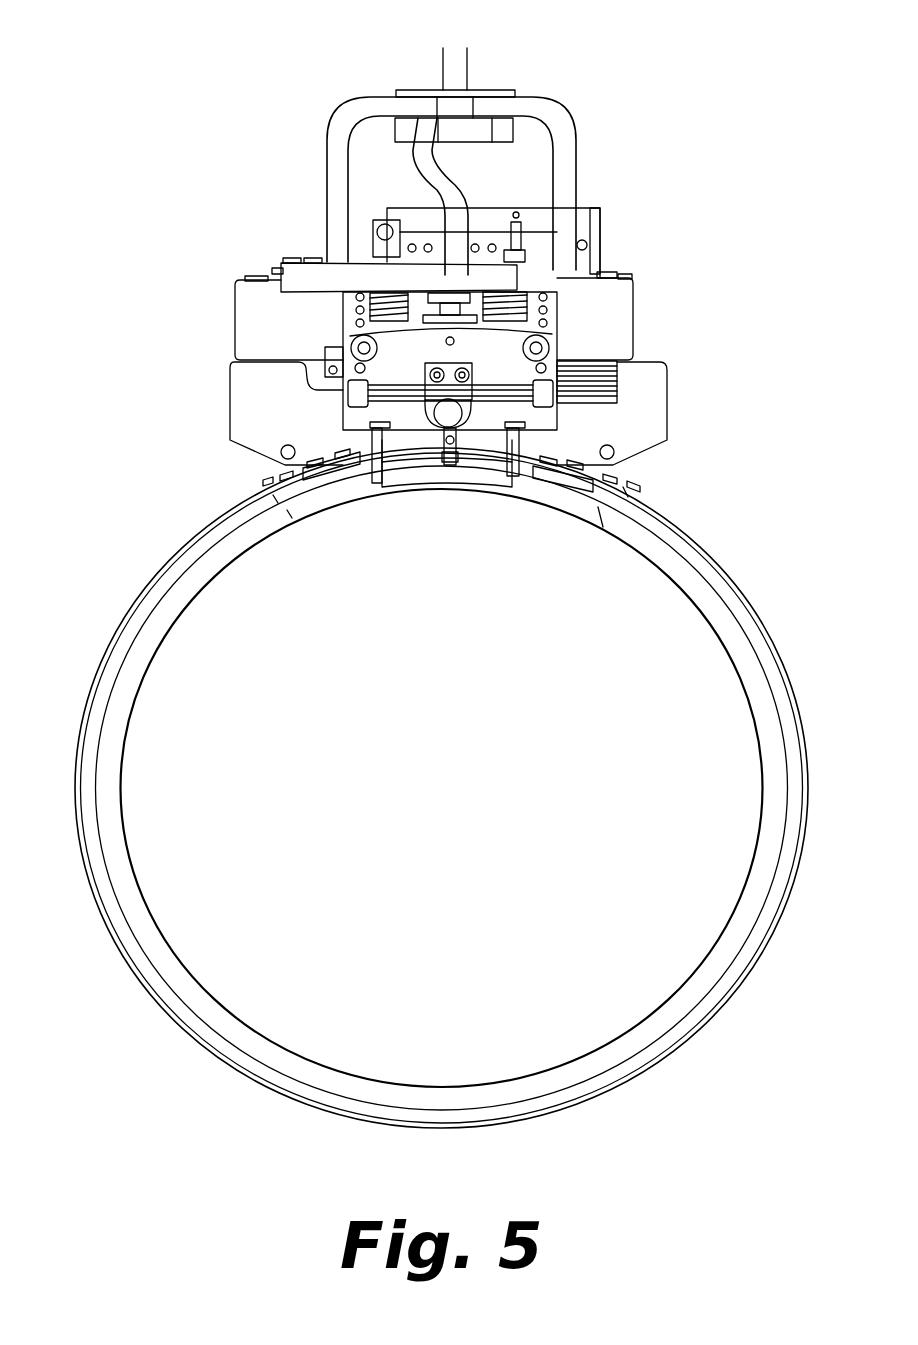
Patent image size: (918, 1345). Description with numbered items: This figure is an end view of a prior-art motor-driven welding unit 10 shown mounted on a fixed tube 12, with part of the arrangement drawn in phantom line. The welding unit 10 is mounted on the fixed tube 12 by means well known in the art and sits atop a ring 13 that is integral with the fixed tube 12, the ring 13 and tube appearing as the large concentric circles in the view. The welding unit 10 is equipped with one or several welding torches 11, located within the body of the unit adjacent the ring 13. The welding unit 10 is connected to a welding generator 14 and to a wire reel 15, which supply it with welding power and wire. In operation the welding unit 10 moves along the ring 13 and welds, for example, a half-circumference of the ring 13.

The motor-driven welding unit 10 is at (224, 356).
The welding torches 11 is at (423, 293).
The fixed tube 12 is at (220, 1013).
The ring 13 is at (665, 1067).
The welding generator 14 is at (358, 130).
The wire reel 15 is at (393, 217).